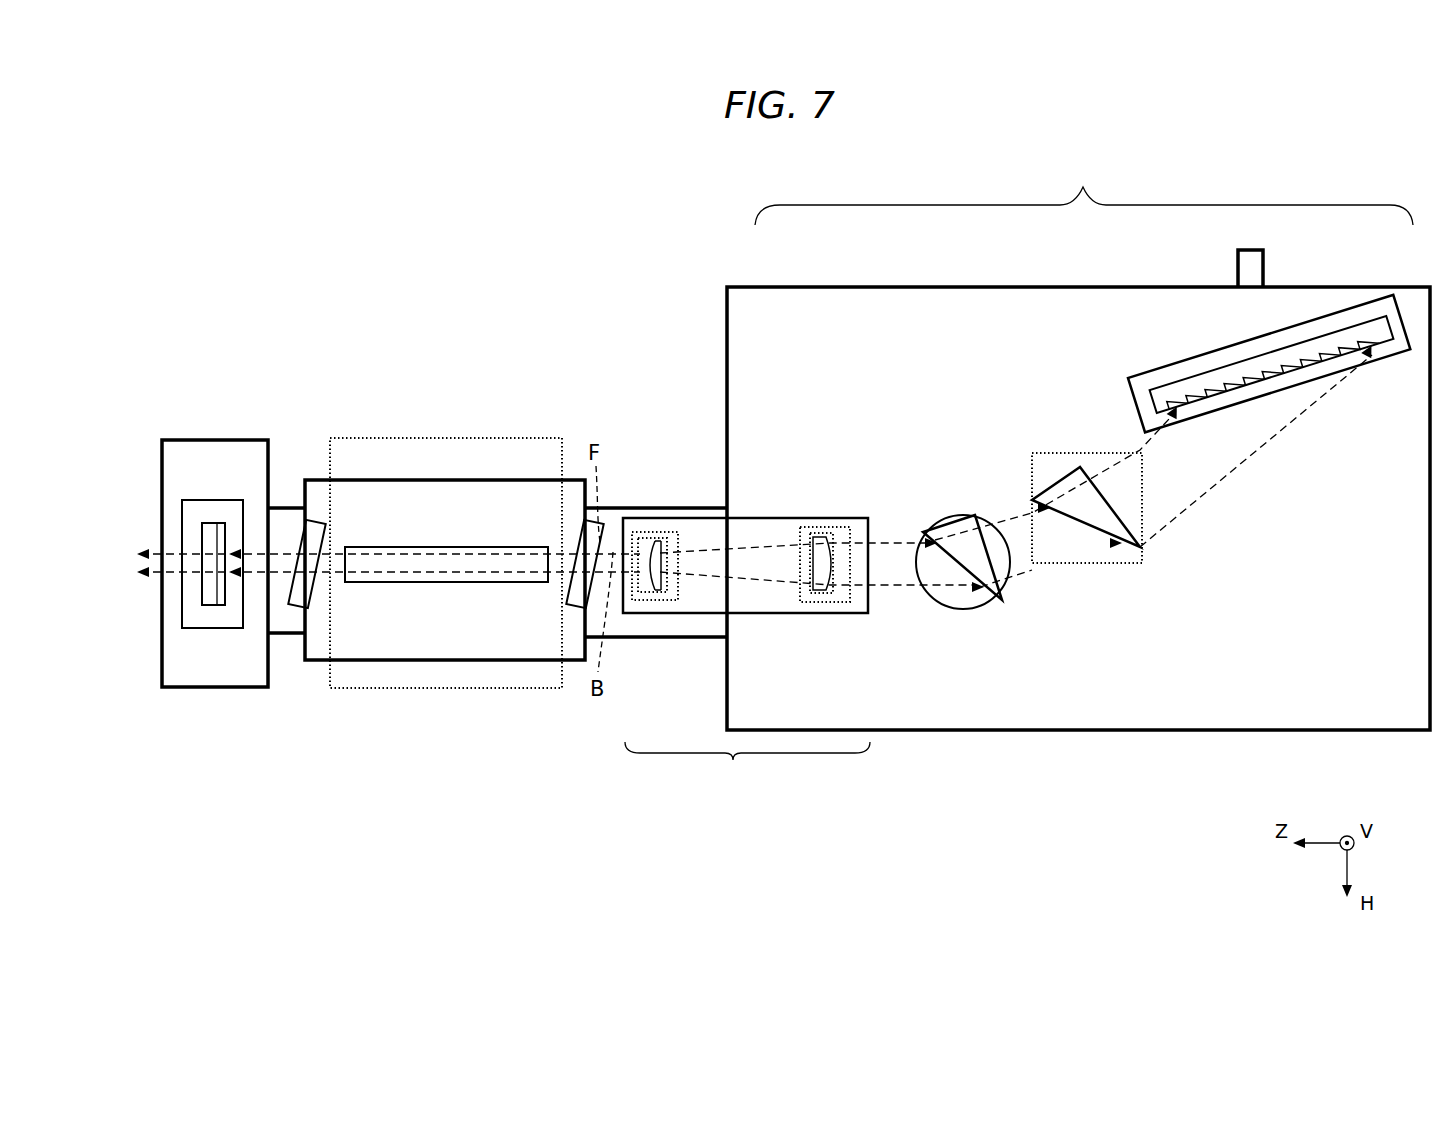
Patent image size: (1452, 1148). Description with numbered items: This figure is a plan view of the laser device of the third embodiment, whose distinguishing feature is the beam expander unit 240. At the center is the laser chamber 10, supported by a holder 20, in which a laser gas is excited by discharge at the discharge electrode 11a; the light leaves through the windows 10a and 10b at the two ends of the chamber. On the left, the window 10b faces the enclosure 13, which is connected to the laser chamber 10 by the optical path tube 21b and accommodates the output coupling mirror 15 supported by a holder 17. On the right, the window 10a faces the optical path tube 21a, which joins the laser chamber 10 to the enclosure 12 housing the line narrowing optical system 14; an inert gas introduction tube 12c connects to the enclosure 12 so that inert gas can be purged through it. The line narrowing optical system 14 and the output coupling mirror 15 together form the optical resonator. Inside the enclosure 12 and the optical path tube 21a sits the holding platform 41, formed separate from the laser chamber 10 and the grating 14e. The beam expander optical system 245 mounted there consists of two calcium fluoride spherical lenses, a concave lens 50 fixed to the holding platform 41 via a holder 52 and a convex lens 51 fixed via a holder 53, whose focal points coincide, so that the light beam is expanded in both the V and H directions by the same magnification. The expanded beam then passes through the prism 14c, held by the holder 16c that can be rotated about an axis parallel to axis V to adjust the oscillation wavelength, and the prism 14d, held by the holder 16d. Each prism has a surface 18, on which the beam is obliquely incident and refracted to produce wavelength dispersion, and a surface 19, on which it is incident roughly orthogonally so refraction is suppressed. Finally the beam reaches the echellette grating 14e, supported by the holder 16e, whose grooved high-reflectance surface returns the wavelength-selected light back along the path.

The laser chamber 10 is at (352, 480).
The window 10a is at (566, 592).
The window 10b is at (327, 532).
The discharge electrode 11a is at (428, 530).
The enclosure 12 is at (740, 287).
The inert gas introduction tube 12c is at (1265, 280).
The enclosure 13 is at (220, 440).
The line narrowing optical system 14 is at (1084, 193).
The prism 14c is at (948, 512).
The prism 14d is at (1080, 455).
The grating 14e is at (1172, 380).
The output coupling mirror 15 is at (210, 605).
The holder 16c is at (957, 612).
The holder 16d is at (1090, 565).
The holder 16e is at (1300, 388).
The holder 17 is at (197, 628).
The surface 18 is at (968, 568).
The surface 19 is at (978, 520).
The holder 20 is at (437, 690).
The optical path tube 21a is at (665, 640).
The optical path tube 21b is at (293, 637).
The holding platform 41 is at (775, 614).
The concave lens 50 is at (650, 540).
The convex lens 51 is at (812, 535).
The holder 52 is at (678, 535).
The holder 53 is at (835, 530).
The beam expander unit 240 is at (773, 820).
The beam expander optical system 245 is at (763, 768).